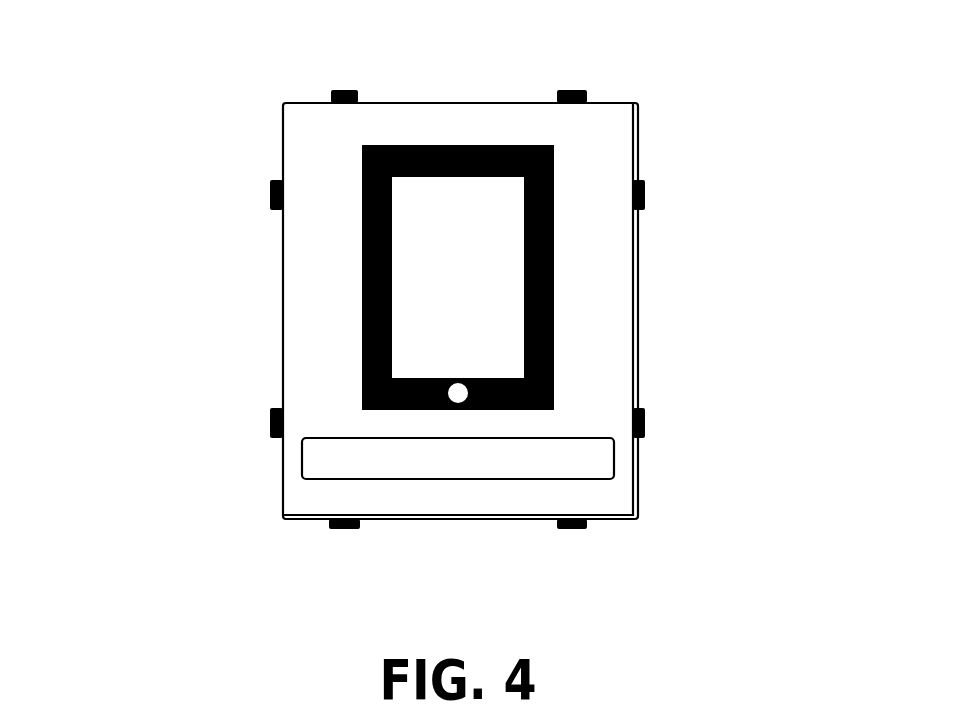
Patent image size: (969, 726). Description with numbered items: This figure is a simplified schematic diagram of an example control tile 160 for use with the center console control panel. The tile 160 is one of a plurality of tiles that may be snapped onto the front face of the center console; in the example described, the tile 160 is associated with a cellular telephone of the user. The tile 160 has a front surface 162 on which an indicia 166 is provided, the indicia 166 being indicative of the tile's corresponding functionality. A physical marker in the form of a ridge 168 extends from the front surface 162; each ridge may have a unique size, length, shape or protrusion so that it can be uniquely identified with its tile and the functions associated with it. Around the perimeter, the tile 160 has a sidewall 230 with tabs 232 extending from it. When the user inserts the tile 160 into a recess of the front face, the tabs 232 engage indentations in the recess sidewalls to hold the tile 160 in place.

The control tile 160 is at (283, 479).
The front surface 162 is at (328, 283).
The indicia 166 is at (362, 185).
The ridge 168 is at (583, 479).
The sidewall 230 is at (460, 103).
The tabs 232 is at (347, 90).